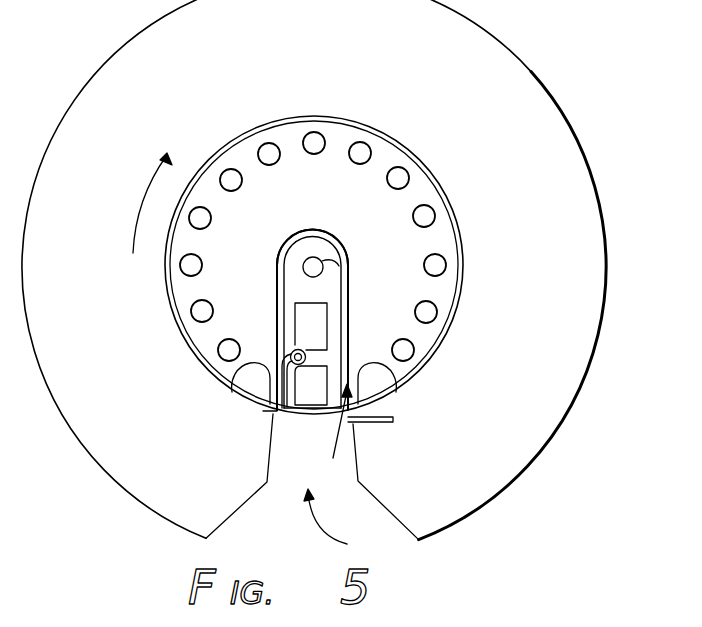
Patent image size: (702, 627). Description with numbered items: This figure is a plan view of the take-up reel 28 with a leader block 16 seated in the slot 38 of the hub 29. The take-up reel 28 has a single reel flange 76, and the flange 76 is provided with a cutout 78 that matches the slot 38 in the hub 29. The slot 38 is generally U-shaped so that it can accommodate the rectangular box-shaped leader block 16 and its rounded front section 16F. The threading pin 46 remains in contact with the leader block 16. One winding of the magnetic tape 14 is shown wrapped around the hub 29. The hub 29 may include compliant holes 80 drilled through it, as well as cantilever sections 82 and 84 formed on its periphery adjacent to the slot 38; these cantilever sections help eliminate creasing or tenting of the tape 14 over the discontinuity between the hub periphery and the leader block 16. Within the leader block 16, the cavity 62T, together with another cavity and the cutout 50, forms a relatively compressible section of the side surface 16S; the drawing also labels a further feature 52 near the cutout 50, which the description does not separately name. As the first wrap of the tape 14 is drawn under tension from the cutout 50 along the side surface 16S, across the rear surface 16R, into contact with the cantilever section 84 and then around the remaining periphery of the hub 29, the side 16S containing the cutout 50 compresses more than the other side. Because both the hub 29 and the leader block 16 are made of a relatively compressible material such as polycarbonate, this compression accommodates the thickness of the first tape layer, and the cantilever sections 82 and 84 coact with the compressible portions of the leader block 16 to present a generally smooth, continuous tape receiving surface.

The magnetic tape 14 is at (391, 427).
The leader block 16 is at (314, 333).
The rounded front section 16F is at (314, 246).
The side surface 16S is at (278, 286).
The rear surface 16R is at (315, 415).
The take-up reel 28 is at (334, 270).
The hub 29 is at (423, 189).
The slot 38 is at (334, 436).
The threading pin 46 is at (323, 268).
The cutout 50 is at (283, 345).
The pivot 52 is at (290, 356).
The cavity 62T is at (320, 374).
The reel flange 76 is at (514, 71).
The cutout 78 is at (336, 523).
The compliant holes 80 is at (266, 164).
The cantilever section 82 is at (267, 404).
The cantilever section 84 is at (380, 406).